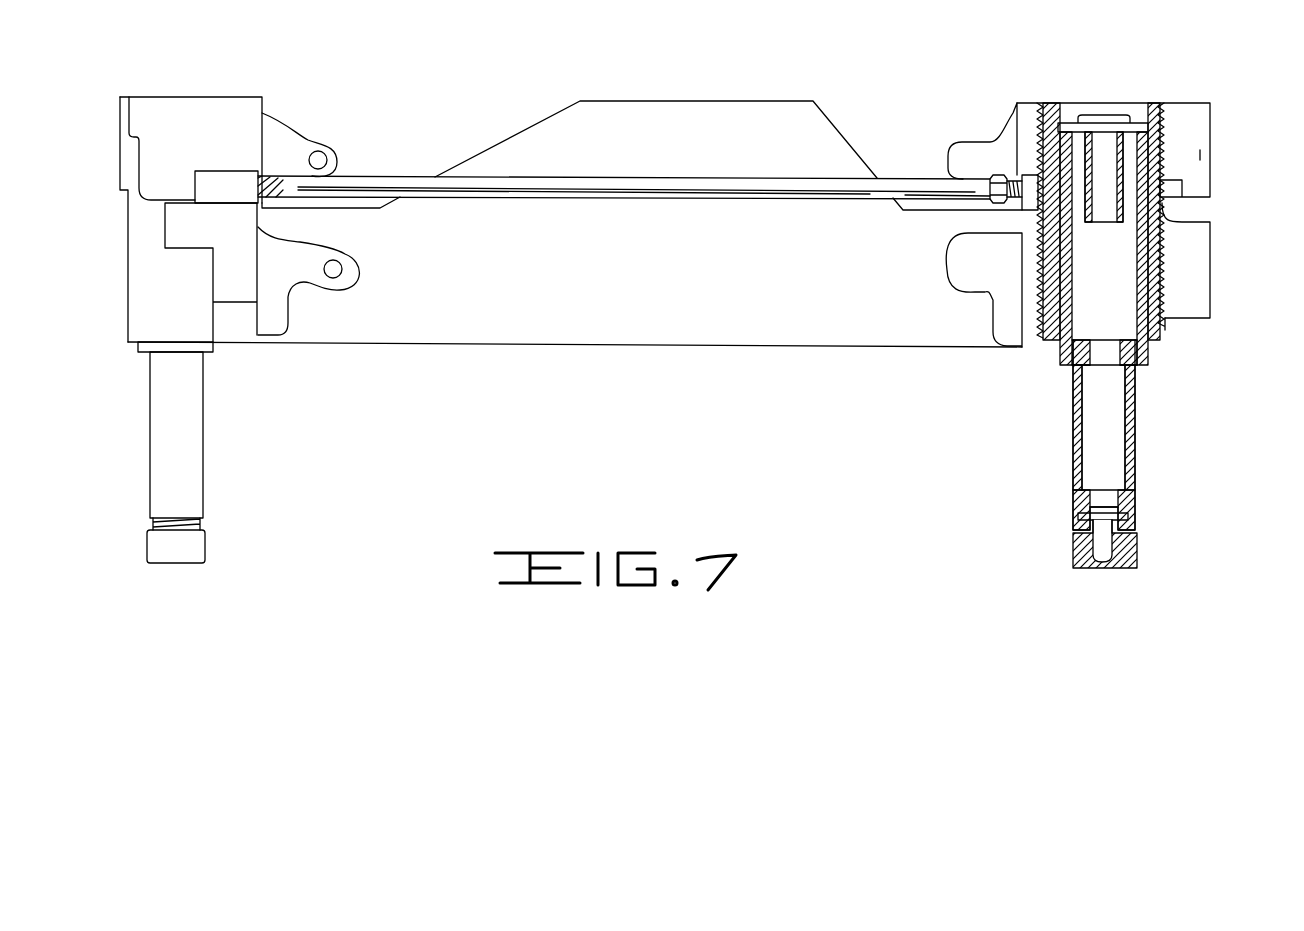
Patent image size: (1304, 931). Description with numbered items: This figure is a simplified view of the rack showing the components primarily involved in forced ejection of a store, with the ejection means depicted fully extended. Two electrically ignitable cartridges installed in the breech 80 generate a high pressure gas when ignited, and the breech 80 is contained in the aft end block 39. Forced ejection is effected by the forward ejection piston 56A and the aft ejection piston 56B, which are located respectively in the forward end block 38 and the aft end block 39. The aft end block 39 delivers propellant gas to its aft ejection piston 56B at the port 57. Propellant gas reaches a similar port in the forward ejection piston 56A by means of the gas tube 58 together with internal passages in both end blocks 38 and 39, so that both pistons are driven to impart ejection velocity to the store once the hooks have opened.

The forward end block 38 is at (163, 96).
The aft end block 39 is at (1172, 103).
The forward ejection piston 56A is at (203, 475).
The aft ejection piston 56B is at (1136, 476).
The port 57 is at (1108, 117).
The gas tube 58 is at (385, 176).
The breech 80 is at (1203, 256).